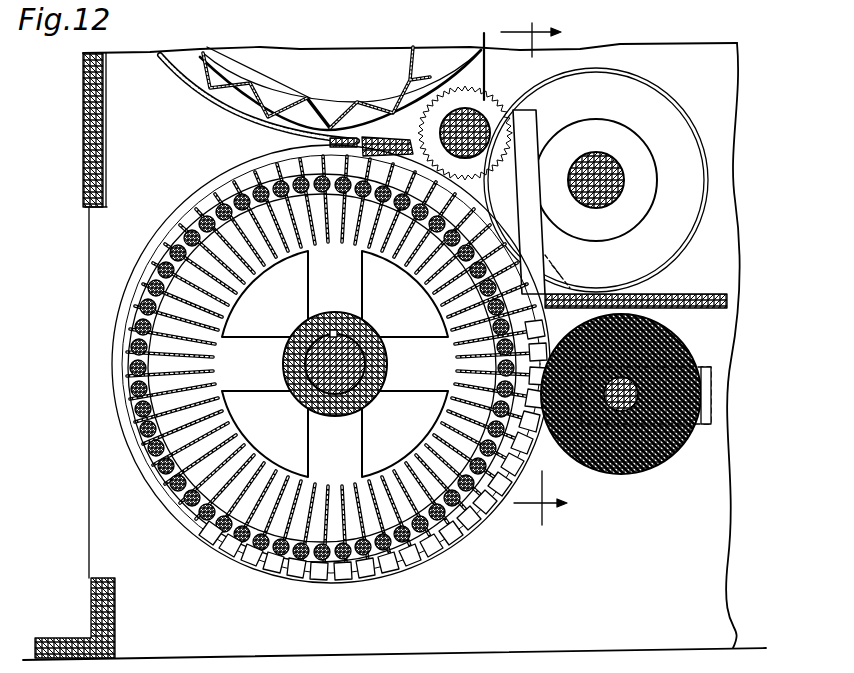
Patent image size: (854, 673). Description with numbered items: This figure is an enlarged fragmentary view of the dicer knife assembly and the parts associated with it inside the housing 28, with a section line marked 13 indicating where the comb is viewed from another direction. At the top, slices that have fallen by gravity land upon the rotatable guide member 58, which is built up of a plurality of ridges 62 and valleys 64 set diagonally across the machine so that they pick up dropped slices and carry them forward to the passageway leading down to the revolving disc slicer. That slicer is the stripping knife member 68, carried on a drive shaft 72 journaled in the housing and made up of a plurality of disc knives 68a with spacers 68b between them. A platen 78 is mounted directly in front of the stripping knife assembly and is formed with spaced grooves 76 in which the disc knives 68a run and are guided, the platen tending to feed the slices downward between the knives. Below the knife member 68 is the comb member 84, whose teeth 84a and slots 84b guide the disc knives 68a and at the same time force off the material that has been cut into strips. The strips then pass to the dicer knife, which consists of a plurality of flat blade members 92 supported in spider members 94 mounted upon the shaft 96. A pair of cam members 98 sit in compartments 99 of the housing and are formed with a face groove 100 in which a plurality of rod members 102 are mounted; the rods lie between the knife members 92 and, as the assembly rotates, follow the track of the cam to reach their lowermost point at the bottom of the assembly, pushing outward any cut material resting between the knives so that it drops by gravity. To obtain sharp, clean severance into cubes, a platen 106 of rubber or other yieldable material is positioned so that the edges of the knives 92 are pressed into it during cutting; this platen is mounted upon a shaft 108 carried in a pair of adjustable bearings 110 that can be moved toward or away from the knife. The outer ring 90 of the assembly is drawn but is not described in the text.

The housing 28 is at (178, 75).
The rotatable guide member 58 is at (213, 106).
The ridges 62 is at (440, 84).
The valleys 64 is at (283, 52).
The spaced grooves 76 is at (477, 55).
The platen 78 is at (489, 103).
The stripping knife member 68 is at (624, 66).
The disc knives 68a is at (693, 143).
The spacers 68b is at (626, 133).
The drive shaft 72 is at (605, 193).
The comb member 84 is at (710, 296).
The teeth 84a is at (543, 278).
The slots 84b is at (583, 290).
The wheel 90 is at (292, 375).
The flat blade members 92 is at (267, 168).
The spider members 94 is at (362, 401).
The shaft 96 is at (306, 340).
The cam members 98 is at (118, 364).
The compartments 99 is at (118, 406).
The face groove 100 is at (127, 324).
The rod members 102 is at (143, 291).
The platen 106 is at (695, 448).
The shaft 108 is at (710, 370).
The adjustable bearings 110 is at (705, 390).
The section line 13 is at (534, 273).